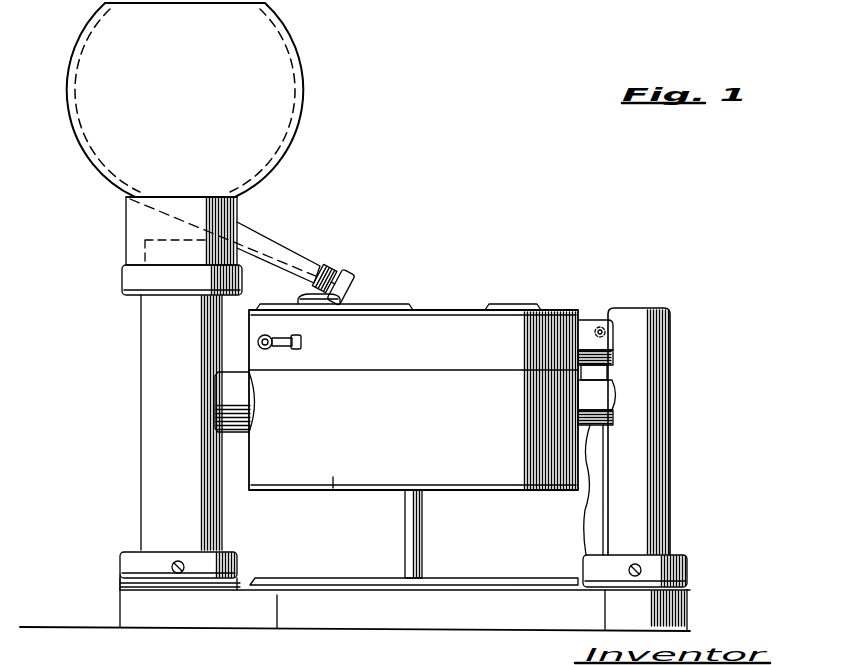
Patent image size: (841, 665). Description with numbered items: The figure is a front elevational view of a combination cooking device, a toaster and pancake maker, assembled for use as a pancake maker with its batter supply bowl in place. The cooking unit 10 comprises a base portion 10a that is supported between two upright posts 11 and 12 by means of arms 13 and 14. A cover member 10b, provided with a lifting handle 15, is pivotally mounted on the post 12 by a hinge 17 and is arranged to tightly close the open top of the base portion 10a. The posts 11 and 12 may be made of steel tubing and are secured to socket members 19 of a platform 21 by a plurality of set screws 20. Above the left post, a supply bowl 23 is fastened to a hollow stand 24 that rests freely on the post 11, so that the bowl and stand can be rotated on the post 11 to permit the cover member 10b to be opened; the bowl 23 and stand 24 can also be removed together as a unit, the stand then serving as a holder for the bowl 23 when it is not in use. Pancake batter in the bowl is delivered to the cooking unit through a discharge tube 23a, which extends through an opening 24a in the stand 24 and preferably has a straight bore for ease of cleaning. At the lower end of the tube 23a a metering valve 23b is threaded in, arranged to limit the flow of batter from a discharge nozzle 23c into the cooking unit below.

The cooking unit 10 is at (553, 311).
The base portion 10a is at (325, 491).
The cover member 10b is at (445, 337).
The upright post 11 is at (153, 348).
The upright post 12 is at (672, 320).
The arm 13 is at (232, 434).
The arm 14 is at (584, 486).
The lifting handle 15 is at (275, 352).
The hinge 17 is at (605, 322).
The socket member 19 is at (128, 562).
The set screw 20 is at (178, 574).
The platform 21 is at (323, 625).
The supply bowl 23 is at (280, 102).
The discharge tube 23a is at (275, 250).
The metering valve 23b is at (355, 280).
The discharge nozzle 23c is at (305, 289).
The hollow stand 24 is at (135, 212).
The opening 24a is at (237, 222).